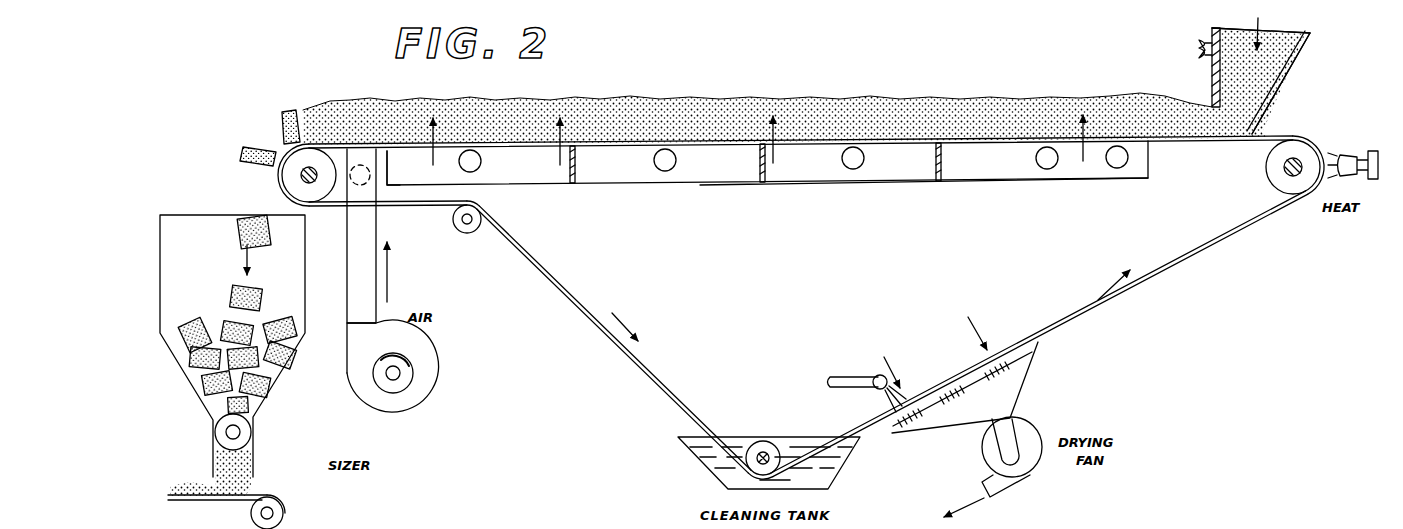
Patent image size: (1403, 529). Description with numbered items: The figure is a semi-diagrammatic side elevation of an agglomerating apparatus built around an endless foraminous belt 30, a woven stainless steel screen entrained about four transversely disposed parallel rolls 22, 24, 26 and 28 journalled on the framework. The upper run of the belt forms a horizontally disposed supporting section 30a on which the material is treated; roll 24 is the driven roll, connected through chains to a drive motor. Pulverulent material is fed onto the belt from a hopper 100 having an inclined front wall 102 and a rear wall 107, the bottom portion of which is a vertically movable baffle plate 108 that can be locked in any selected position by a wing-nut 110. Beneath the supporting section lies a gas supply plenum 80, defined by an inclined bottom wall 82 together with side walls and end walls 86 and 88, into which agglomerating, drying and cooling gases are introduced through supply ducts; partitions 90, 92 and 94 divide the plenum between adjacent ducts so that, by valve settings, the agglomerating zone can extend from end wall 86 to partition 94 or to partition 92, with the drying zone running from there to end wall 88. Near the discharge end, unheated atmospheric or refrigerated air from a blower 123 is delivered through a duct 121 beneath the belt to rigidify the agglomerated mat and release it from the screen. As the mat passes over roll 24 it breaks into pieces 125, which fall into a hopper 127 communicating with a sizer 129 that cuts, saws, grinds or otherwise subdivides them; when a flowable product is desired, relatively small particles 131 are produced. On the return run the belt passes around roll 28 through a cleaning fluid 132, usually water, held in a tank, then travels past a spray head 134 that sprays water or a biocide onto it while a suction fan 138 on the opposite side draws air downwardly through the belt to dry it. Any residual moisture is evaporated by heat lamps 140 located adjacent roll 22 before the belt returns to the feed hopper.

The roll 22 is at (1280, 178).
The roll 24 is at (298, 170).
The roll 26 is at (466, 224).
The roll 28 is at (766, 440).
The endless foraminous supporting member or belt 30 is at (343, 142).
The horizontally disposed supporting section 30a is at (920, 140).
The gas supply plenum 80 is at (883, 190).
The inclined bottom wall 82 is at (822, 183).
The end wall 86 is at (1150, 163).
The end wall 88 is at (412, 172).
The partition 90 is at (577, 167).
The partition 92 is at (759, 167).
The partition 94 is at (942, 169).
The hopper 100 is at (1290, 45).
The inclined front wall 102 is at (1294, 66).
The rear wall 107 is at (1224, 36).
The plate 108 is at (1211, 93).
The wing-nut 110 is at (1198, 46).
The duct 121 is at (347, 266).
The blower 123 is at (364, 357).
The pieces 125 is at (287, 112).
The hopper 127 is at (163, 242).
The sizer 129 is at (222, 432).
The particles 131 is at (252, 478).
The cleaning fluid 132 is at (712, 463).
The spray head 134 is at (880, 375).
The suction fan 138 is at (1039, 435).
The heat lamps 140 is at (1352, 150).